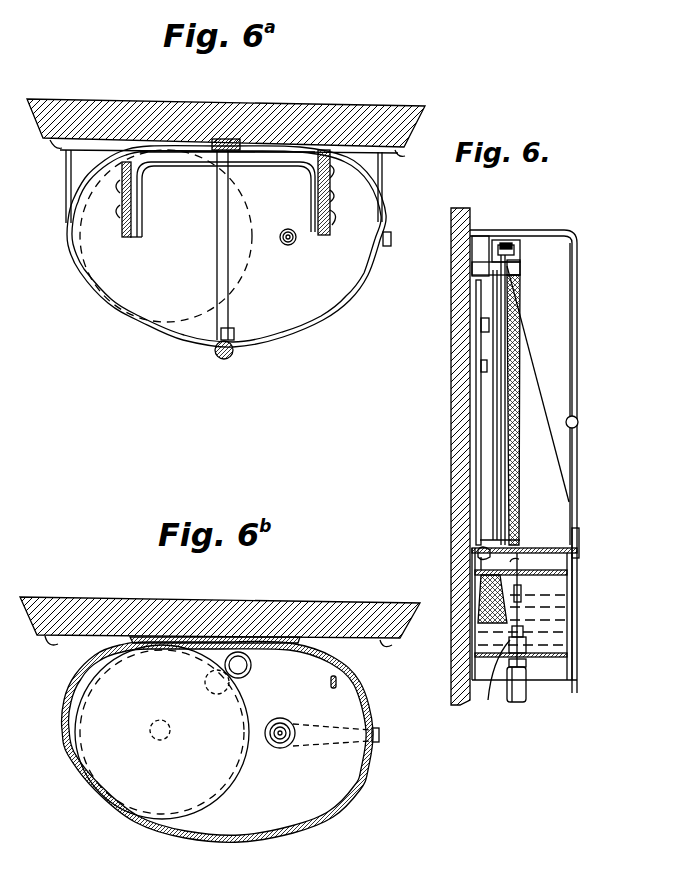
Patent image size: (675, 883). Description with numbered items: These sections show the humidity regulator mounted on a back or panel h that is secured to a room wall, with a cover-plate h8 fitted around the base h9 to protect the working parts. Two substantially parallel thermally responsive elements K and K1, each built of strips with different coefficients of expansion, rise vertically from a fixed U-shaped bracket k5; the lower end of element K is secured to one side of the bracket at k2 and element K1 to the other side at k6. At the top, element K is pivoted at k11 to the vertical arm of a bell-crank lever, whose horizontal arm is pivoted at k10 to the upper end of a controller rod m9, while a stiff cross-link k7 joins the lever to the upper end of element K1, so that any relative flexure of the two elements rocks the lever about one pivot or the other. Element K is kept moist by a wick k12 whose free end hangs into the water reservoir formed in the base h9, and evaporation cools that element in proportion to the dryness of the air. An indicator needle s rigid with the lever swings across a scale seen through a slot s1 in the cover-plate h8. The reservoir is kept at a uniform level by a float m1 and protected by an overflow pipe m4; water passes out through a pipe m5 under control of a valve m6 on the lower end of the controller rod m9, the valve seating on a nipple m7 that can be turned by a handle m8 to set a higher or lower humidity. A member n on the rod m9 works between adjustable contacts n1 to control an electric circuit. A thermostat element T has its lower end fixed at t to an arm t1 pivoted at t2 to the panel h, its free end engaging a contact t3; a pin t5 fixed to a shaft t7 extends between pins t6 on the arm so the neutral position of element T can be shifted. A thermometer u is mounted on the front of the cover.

In FIG. 6A, the panel h is at (362, 110).
In FIG. 6, the panel h is at (472, 212).
In FIG. 6B, the panel h is at (376, 604).
In FIG. 6A, the cover-plate h8 is at (383, 202).
In FIG. 6, the cover-plate h8 is at (578, 255).
In FIG. 6A, the base h9 is at (362, 190).
In FIG. 6, the base h9 is at (574, 628).
In FIG. 6B, the base h9 is at (365, 700).
In FIG. 6A, the U-shaped bracket k5 is at (200, 160).
In FIG. 6A, the securing point of element K' k6 is at (134, 226).
In FIG. 6A, the securing point of element K k2 is at (316, 208).
In FIG. 6A, the pivot k11 is at (332, 208).
In FIG. 6, the pivot k11 is at (520, 262).
In FIG. 6, the cross-link k7 is at (512, 240).
In FIG. 6, the pivot k10 is at (481, 563).
In FIG. 6, the wick k12 is at (520, 298).
In FIG. 6A, the thermally responsive element K is at (326, 235).
In FIG. 6, the thermally responsive element K is at (521, 272).
In FIG. 6A, the thermally responsive element K1 is at (122, 236).
In FIG. 6A, the fixing point of element T t is at (232, 165).
In FIG. 6, the fixing point of element T t is at (522, 540).
In FIG. 6A, the arm t1 is at (240, 140).
In FIG. 6, the arm t1 is at (476, 470).
In FIG. 6, the pivot t2 is at (481, 326).
In FIG. 6, the contact t3 is at (480, 245).
In FIG. 6, the pin t5 is at (478, 553).
In FIG. 6, the pins t6 is at (582, 545).
In FIG. 6, the shaft t7 is at (560, 548).
In FIG. 6A, the thermally responsive element T is at (233, 190).
In FIG. 6, the thermally responsive element T is at (498, 482).
In FIG. 6, the member n is at (510, 378).
In FIG. 6, the adjustable switch contacts n1 is at (481, 368).
In FIG. 6, the indicator needle s is at (540, 385).
In FIG. 6, the slot s1 is at (575, 500).
In FIG. 6A, the thermometer u is at (222, 360).
In FIG. 6, the thermometer u is at (579, 272).
In FIG. 6B, the float m1 is at (162, 732).
In FIG. 6B, the overflow pipe m4 is at (252, 668).
In FIG. 6, the pipe m5 is at (527, 695).
In FIG. 6, the valve m6 is at (525, 628).
In FIG. 6, the nipple m7 is at (488, 700).
In FIG. 6A, the handle m8 is at (391, 246).
In FIG. 6B, the handle m8 is at (380, 740).
In FIG. 6A, the controller rod m9 is at (290, 245).
In FIG. 6, the controller rod m9 is at (520, 564).
In FIG. 6B, the controller rod m9 is at (283, 748).